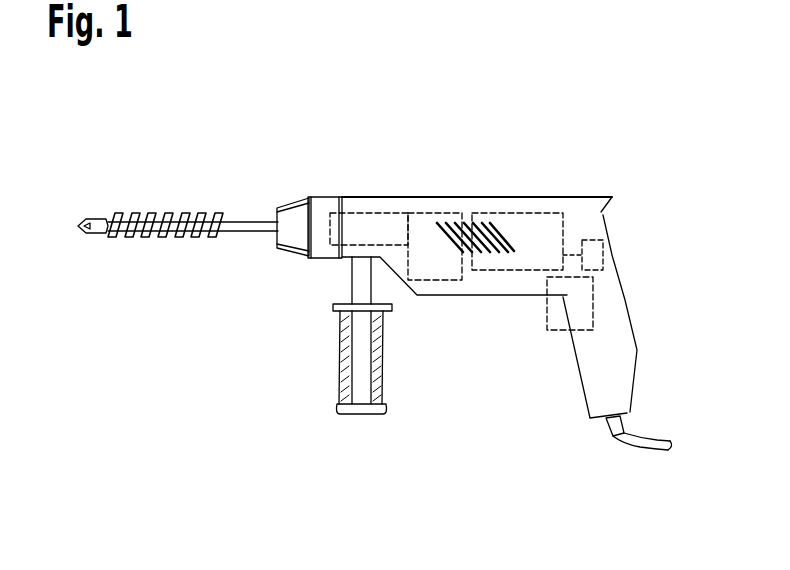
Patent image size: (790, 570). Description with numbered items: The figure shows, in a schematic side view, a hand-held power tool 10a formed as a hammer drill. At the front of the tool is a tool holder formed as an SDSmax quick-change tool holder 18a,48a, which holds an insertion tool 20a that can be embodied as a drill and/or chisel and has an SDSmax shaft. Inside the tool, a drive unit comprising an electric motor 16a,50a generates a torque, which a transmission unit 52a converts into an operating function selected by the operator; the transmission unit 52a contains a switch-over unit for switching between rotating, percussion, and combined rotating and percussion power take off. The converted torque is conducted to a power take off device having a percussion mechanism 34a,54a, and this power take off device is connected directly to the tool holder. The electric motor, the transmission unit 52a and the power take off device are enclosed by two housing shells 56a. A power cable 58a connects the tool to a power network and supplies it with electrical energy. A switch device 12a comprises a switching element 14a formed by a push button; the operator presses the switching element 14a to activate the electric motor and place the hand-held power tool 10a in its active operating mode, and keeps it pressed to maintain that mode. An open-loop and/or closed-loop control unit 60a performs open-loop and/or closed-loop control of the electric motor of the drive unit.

The hand-held power tool 10a is at (570, 109).
The switch device 12a is at (593, 302).
The switching element 14a is at (560, 300).
The drive unit / electric motor 16a,50a is at (507, 212).
The quick-change tool holder / tool holder 18a,48a is at (300, 198).
The insertion tool 20a is at (245, 222).
The percussion mechanism / power take off device 34a,54a is at (392, 196).
The transmission unit 52a is at (445, 197).
The housing shells 56a is at (594, 212).
The power cable 58a is at (668, 430).
The open-loop and/or closed-loop control unit 60a is at (605, 256).